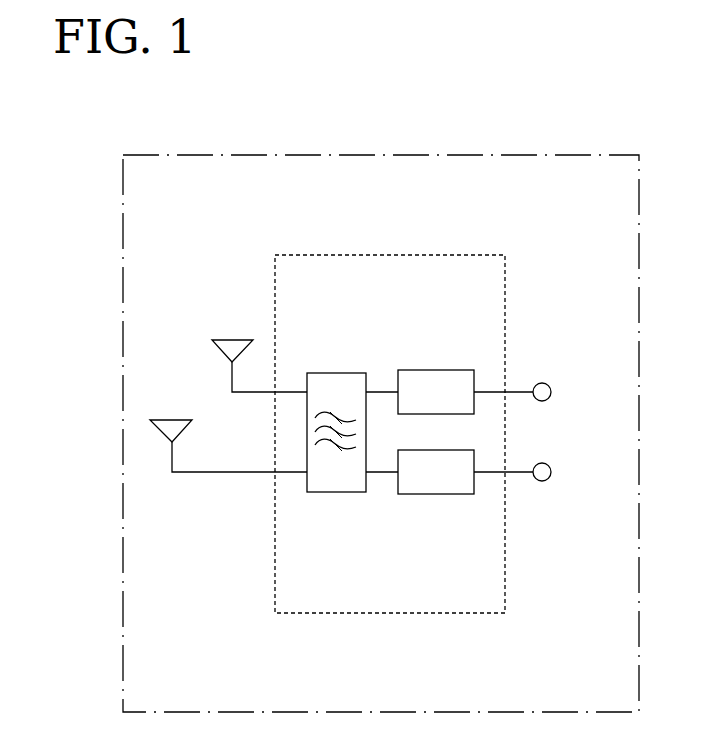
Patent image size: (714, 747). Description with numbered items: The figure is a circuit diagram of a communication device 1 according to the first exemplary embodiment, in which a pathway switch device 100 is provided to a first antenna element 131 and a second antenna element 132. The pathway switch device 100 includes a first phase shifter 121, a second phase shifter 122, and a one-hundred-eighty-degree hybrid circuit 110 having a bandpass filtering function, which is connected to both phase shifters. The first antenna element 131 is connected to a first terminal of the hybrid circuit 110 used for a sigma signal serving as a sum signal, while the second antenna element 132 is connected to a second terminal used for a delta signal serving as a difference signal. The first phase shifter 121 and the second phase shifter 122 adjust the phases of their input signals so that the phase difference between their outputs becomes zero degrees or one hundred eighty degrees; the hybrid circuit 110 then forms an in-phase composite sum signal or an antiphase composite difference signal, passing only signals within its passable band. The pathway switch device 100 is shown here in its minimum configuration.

The communication device 1 is at (383, 155).
The pathway switch device 100 is at (440, 254).
The 180-degree hybrid circuit 110 is at (335, 373).
The first phase shifter 121 is at (457, 352).
The second phase shifter 122 is at (435, 495).
The first antenna element 131 is at (227, 340).
The second antenna element 132 is at (167, 420).